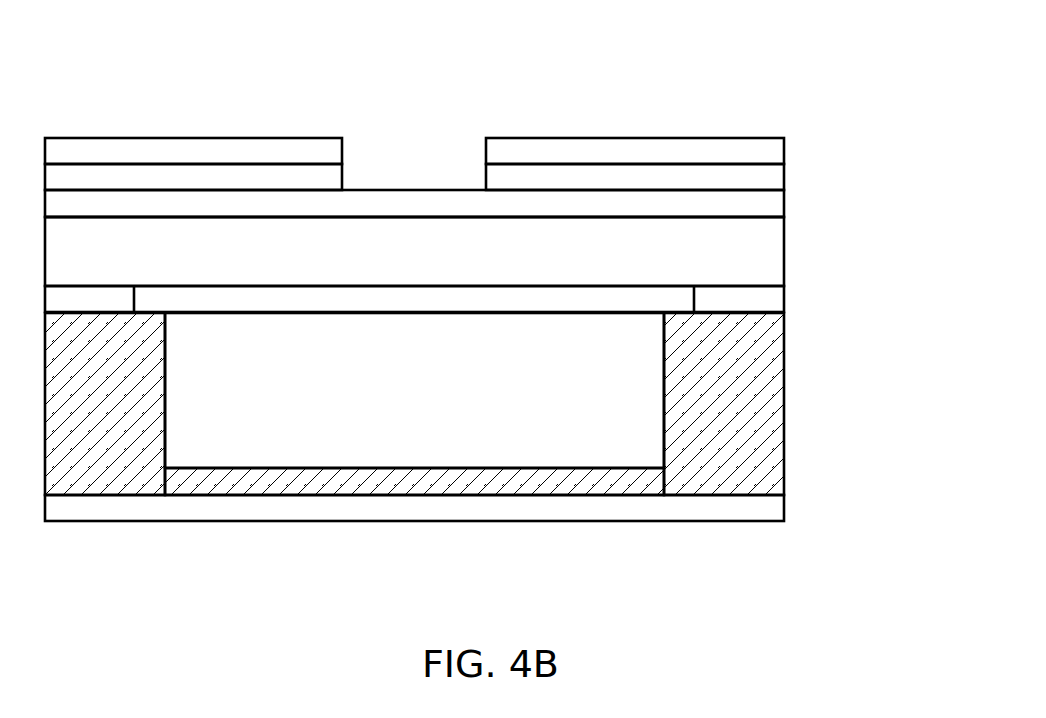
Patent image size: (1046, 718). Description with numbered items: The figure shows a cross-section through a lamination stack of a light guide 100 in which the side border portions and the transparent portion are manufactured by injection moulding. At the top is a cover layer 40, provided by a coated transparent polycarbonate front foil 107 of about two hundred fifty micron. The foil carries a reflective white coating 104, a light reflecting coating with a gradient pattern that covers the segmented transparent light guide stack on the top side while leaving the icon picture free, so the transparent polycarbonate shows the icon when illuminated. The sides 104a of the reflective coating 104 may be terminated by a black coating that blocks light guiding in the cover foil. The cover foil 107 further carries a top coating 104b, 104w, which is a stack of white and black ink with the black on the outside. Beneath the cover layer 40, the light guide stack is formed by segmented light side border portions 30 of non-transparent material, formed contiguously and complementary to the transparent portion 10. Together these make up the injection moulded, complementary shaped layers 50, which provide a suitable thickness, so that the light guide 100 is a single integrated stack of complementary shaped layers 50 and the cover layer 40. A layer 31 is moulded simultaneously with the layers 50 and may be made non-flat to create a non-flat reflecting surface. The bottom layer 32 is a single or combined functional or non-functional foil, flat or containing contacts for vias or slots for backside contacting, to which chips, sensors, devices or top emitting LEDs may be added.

The light guide 100 is at (667, 110).
The cover layer 40 is at (784, 134).
The complementary shaped layers 50 is at (784, 314).
The transparent front foil 107 is at (763, 246).
The reflective white coating 104 is at (440, 302).
The sides of the reflective white coating 104a is at (763, 302).
The top coating 104b is at (107, 152).
The top coating 104w is at (204, 178).
The transparent portion 10 is at (413, 420).
The light side border portions 30 is at (105, 420).
The backside layer 31 is at (567, 480).
The functional foil layer 32 is at (720, 507).